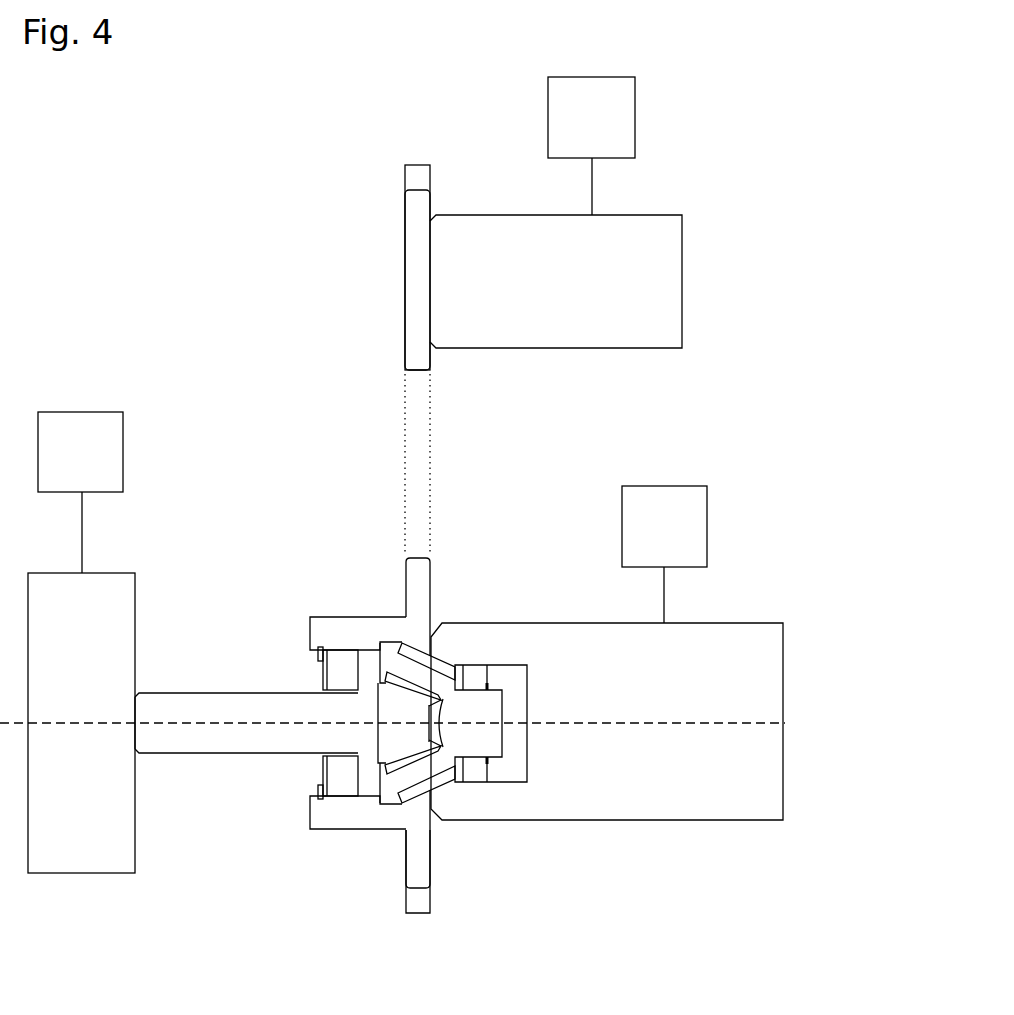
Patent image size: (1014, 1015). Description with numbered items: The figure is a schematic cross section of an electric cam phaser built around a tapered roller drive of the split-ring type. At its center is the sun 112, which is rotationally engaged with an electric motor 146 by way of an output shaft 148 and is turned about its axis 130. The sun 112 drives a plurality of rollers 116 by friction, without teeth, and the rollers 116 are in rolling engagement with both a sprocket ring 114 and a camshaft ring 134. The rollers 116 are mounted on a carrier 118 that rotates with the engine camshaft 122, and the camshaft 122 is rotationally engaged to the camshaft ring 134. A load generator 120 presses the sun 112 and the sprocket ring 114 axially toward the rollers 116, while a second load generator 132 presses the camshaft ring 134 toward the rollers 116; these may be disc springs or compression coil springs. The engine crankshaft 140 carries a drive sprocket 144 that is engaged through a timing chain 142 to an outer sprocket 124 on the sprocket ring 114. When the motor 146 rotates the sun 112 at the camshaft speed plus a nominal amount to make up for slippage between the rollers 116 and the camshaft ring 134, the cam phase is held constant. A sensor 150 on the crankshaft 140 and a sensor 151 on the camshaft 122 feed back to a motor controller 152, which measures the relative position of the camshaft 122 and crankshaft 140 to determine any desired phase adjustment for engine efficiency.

The sun 112 is at (374, 724).
The sprocket ring 114 is at (415, 640).
The rollers 116 is at (407, 757).
The carrier 118 is at (460, 724).
The load generator 120 is at (338, 677).
The camshaft 122 is at (612, 707).
The outer sprocket 124 is at (415, 590).
The axis 130 is at (411, 711).
The second load generator 132 is at (473, 677).
The camshaft ring 134 is at (442, 793).
The engine crankshaft 140 is at (541, 299).
The timing chain 142 is at (413, 182).
The drive sprocket 144 is at (415, 287).
The electric motor 146 is at (67, 654).
The output shaft 148 is at (212, 740).
The sensor 150 is at (575, 132).
The sensor 151 is at (648, 540).
The motor controller 152 is at (67, 464).